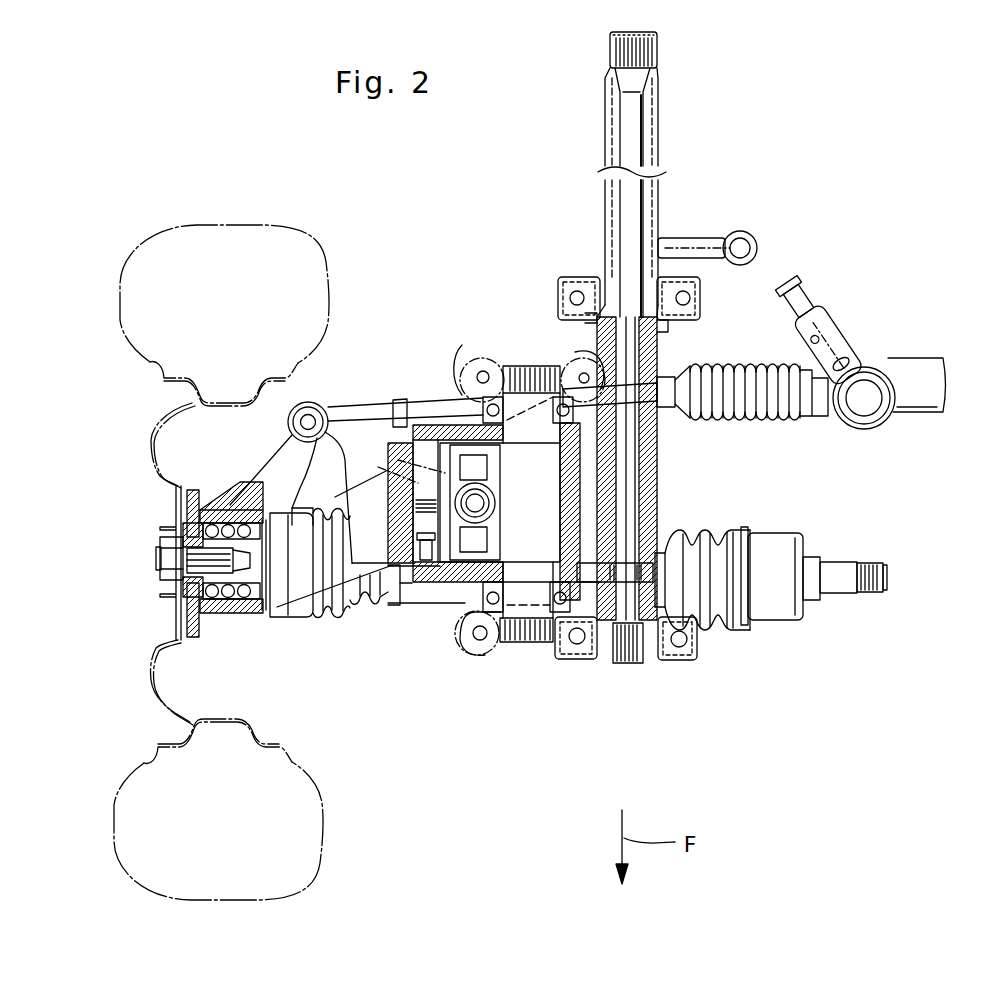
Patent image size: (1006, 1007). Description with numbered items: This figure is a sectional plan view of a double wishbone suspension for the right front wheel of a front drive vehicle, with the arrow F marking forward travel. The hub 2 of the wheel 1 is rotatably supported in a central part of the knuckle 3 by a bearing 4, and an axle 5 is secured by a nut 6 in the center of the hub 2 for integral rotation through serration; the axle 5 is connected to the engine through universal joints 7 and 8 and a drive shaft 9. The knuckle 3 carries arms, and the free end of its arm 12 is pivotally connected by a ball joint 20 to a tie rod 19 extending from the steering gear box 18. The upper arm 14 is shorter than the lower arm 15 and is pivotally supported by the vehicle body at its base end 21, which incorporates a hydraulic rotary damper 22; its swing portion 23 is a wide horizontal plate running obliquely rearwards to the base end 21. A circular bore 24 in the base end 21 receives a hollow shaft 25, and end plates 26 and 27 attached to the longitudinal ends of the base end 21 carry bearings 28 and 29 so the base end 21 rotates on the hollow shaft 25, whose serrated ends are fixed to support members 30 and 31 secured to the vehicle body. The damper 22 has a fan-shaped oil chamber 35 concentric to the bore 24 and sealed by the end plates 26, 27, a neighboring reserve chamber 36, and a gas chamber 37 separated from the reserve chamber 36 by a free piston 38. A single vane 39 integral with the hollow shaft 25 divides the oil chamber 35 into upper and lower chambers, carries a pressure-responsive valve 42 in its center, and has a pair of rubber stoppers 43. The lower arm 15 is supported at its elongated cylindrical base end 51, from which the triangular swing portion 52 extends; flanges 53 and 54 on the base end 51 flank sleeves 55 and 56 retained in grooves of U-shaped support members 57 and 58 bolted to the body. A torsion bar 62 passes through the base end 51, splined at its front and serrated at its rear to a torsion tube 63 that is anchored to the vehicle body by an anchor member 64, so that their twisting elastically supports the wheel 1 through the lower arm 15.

The wheel 1 is at (322, 255).
The hub 2 is at (175, 612).
The knuckle 3 is at (231, 505).
The bearing 4 is at (212, 523).
The axle 5 is at (207, 614).
The nut 6 is at (158, 581).
The universal joint 7 is at (290, 619).
The universal joint 8 is at (768, 623).
The drive shaft 9 is at (653, 543).
The lower arm 12 is at (268, 472).
The upper arm 14 is at (348, 612).
The lower arm 15 is at (418, 605).
The steering gear box 18 is at (897, 357).
The tie rod 19 is at (400, 399).
The ball joint 20 is at (311, 403).
The base end 21 is at (617, 479).
The hydraulic rotary damper 22 is at (463, 592).
The swing portion 23 is at (383, 526).
The circular bore 24 is at (573, 452).
The hollow shaft 25 is at (516, 645).
The end plate 26 is at (470, 656).
The end plate 27 is at (437, 425).
The bearing 28 is at (503, 600).
The bearing 29 is at (473, 355).
The support member 30 is at (556, 615).
The support member 31 is at (521, 364).
The oil chamber 35 is at (407, 445).
The reserve chamber 36 is at (410, 545).
The gas chamber 37 is at (378, 467).
The free piston 38 is at (405, 432).
The vane 39 is at (500, 490).
The valve 42 is at (496, 505).
The rubber stoppers 43 is at (488, 470).
The base end 51 is at (657, 500).
The swing portion 52 is at (395, 607).
The flange 53 is at (703, 617).
The flange 54 is at (669, 328).
The sleeve 55 is at (652, 662).
The sleeve 56 is at (590, 277).
The U-shaped support member 57 is at (683, 662).
The U-shaped support member 58 is at (560, 285).
The torsion bar 62 is at (655, 210).
The torsion tube 63 is at (660, 137).
The anchor member 64 is at (700, 246).